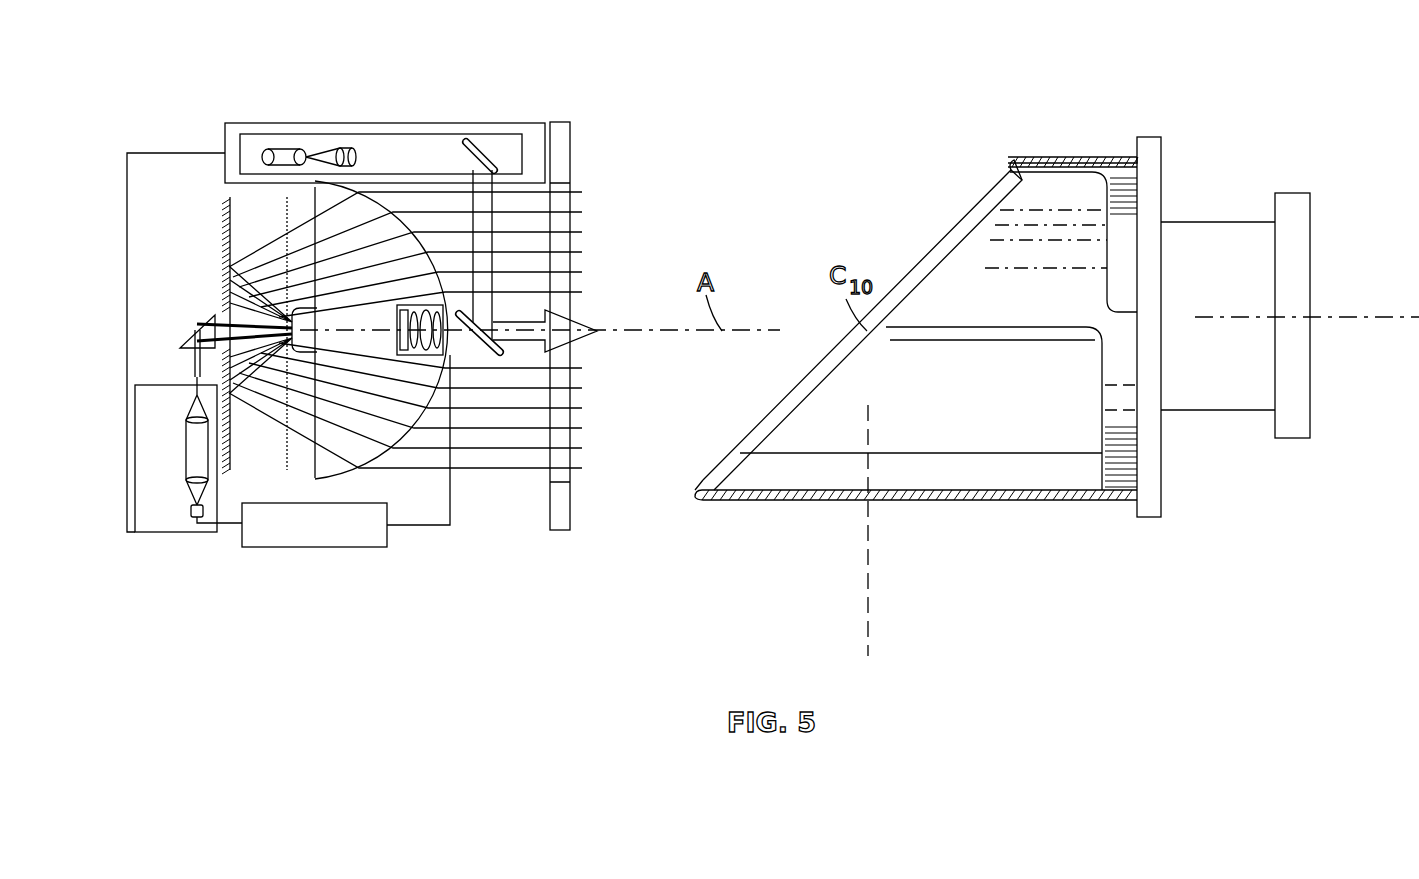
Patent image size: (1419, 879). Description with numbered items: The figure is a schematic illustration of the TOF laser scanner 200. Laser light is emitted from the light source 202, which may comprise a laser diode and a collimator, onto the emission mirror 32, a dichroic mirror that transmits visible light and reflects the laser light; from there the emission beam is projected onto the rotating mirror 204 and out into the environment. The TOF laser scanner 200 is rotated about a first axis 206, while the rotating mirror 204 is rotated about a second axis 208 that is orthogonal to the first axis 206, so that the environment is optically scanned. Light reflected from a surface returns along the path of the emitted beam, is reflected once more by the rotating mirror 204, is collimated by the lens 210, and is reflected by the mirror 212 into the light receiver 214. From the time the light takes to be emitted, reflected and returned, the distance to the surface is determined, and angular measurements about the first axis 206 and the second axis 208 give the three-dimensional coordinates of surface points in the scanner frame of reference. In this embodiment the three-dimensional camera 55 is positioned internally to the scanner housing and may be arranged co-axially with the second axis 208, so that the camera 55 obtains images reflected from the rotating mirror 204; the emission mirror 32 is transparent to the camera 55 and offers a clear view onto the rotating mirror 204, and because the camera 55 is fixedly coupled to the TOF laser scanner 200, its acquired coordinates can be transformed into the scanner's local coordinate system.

The TOF laser scanner 200 is at (180, 42).
The light source 202 is at (286, 152).
The rotating mirror 204 is at (981, 222).
The first axis 206 is at (870, 562).
The second axis 208 is at (1352, 316).
The lens 210 is at (363, 448).
The mirror 212 is at (210, 318).
The light receiver 214 is at (143, 520).
The emission mirror 32 is at (490, 352).
The 3D-camera 55 is at (433, 352).